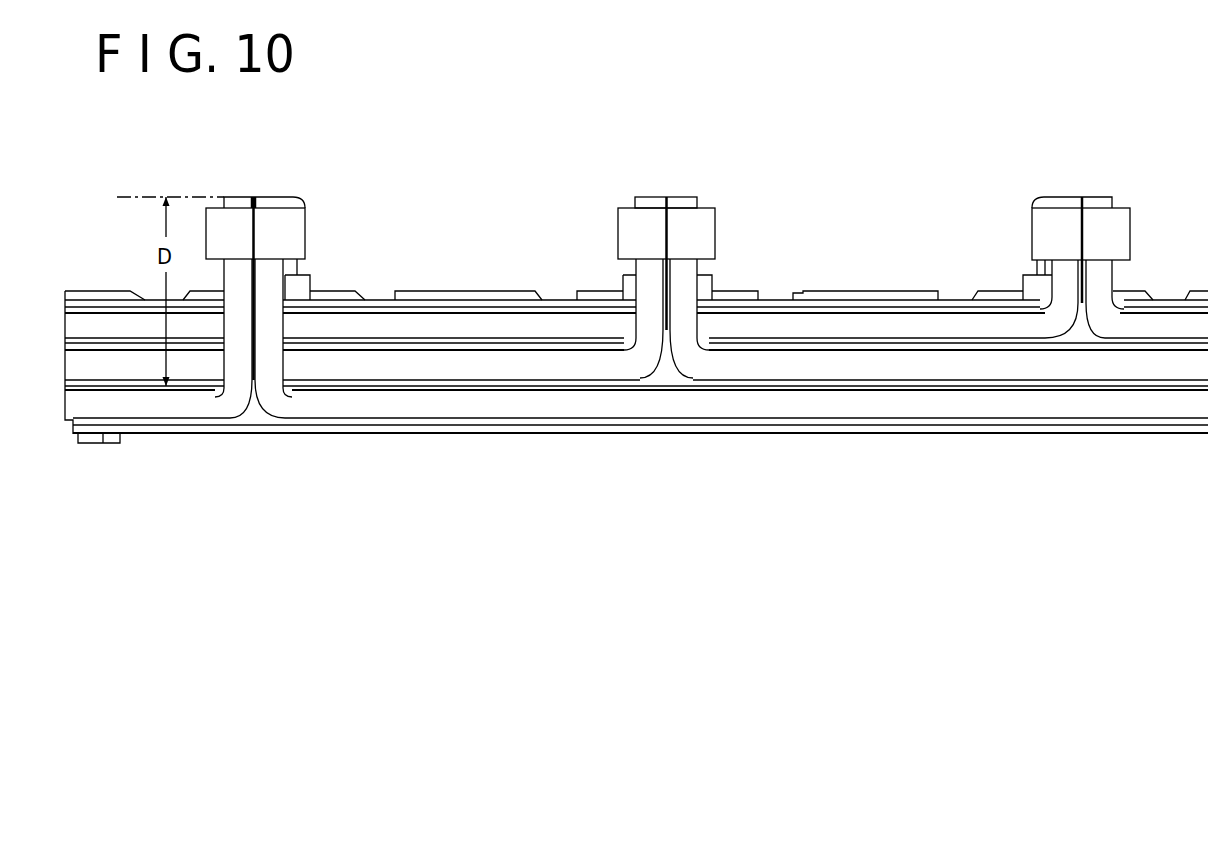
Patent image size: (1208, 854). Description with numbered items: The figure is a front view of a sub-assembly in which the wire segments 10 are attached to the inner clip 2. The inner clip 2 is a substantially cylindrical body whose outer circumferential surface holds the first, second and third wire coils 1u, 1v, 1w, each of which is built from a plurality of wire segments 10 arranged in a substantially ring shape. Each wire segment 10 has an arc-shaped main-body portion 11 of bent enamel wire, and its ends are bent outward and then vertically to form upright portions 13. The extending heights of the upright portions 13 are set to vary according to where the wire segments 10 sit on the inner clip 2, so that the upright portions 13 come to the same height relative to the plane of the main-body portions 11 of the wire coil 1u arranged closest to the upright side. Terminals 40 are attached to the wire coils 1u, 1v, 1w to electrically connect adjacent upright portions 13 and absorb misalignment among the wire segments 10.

The first wire coil 1u is at (58, 334).
The second wire coil 1v is at (60, 367).
The third wire coil 1w is at (66, 412).
The inner clip 2 is at (860, 289).
The wire segment 10 is at (776, 322).
The main-body portion 11 is at (963, 325).
The upright portion 13 is at (243, 197).
The terminal 40 is at (610, 235).